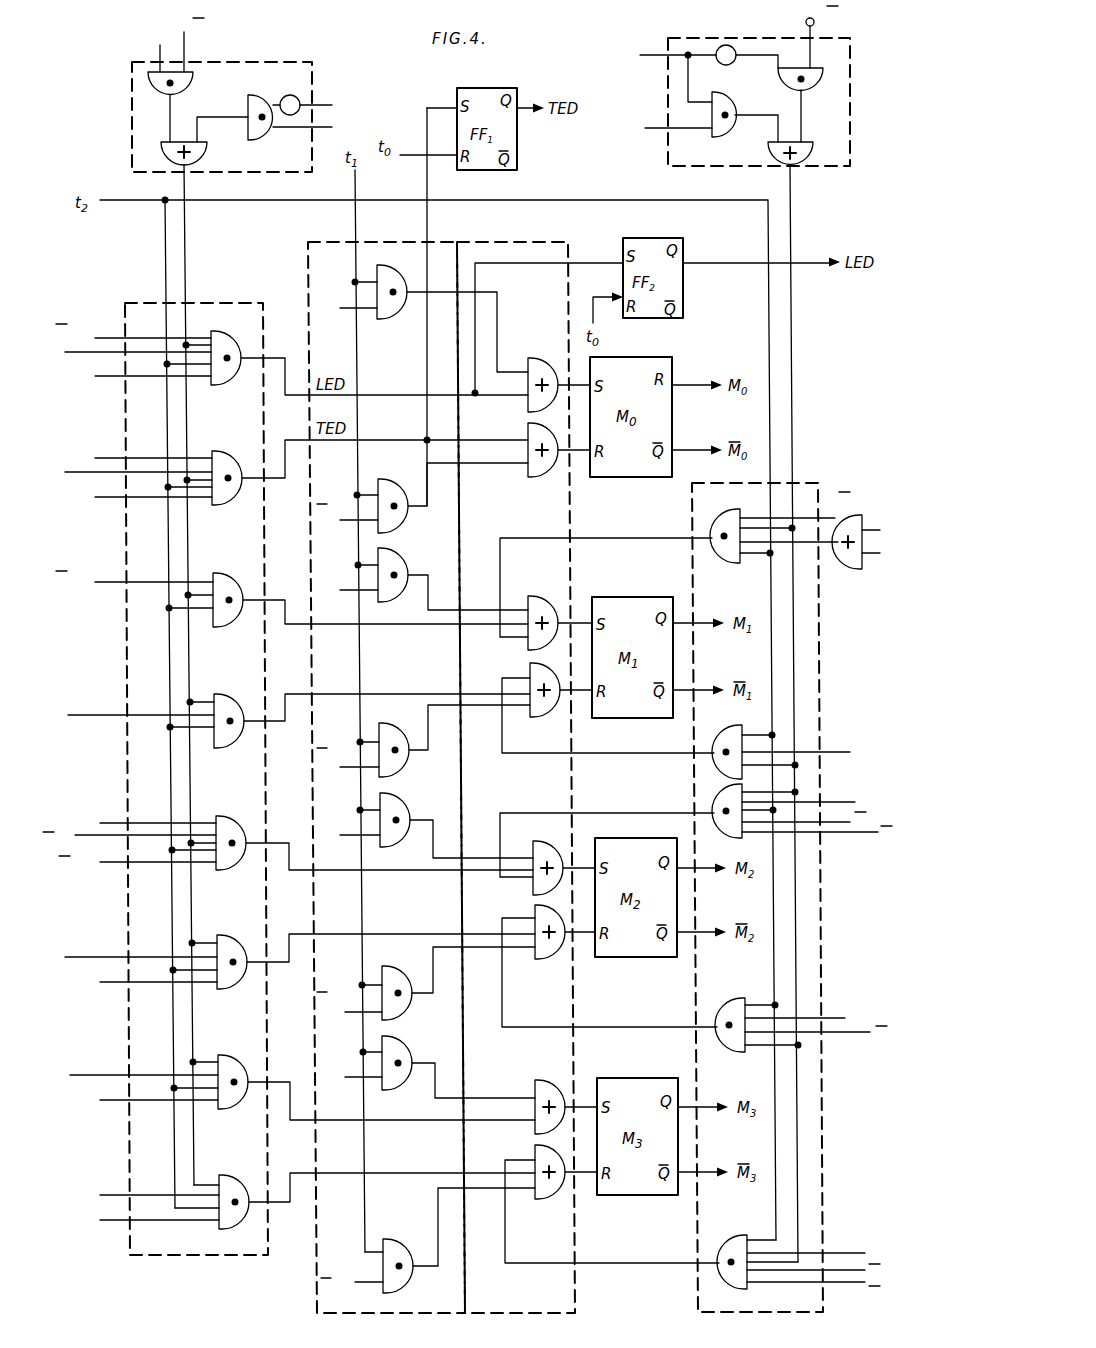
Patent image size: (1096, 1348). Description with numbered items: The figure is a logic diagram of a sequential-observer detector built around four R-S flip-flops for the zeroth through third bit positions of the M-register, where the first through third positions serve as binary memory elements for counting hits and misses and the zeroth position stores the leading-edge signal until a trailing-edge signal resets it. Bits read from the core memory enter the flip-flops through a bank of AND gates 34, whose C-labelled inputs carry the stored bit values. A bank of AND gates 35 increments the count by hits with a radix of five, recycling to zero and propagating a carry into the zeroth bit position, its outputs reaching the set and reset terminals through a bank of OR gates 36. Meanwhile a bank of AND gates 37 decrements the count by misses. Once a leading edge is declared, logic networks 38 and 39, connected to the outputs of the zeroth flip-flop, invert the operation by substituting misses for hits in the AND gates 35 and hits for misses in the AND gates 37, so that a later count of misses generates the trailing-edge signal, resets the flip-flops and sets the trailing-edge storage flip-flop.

The bank of AND gates 34 is at (317, 1306).
The bank of AND gates 35 is at (178, 1258).
The bank of OR gates 36 is at (560, 1296).
The bank of AND gates 37 is at (698, 1299).
The logic network 38 is at (140, 122).
The logic network 39 is at (835, 121).